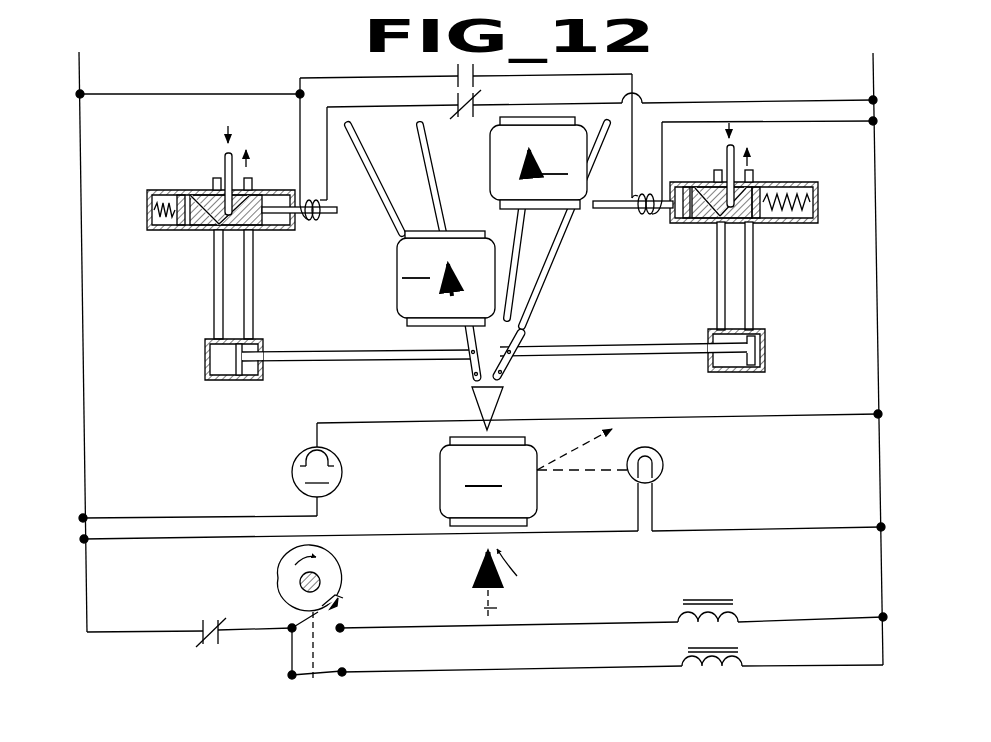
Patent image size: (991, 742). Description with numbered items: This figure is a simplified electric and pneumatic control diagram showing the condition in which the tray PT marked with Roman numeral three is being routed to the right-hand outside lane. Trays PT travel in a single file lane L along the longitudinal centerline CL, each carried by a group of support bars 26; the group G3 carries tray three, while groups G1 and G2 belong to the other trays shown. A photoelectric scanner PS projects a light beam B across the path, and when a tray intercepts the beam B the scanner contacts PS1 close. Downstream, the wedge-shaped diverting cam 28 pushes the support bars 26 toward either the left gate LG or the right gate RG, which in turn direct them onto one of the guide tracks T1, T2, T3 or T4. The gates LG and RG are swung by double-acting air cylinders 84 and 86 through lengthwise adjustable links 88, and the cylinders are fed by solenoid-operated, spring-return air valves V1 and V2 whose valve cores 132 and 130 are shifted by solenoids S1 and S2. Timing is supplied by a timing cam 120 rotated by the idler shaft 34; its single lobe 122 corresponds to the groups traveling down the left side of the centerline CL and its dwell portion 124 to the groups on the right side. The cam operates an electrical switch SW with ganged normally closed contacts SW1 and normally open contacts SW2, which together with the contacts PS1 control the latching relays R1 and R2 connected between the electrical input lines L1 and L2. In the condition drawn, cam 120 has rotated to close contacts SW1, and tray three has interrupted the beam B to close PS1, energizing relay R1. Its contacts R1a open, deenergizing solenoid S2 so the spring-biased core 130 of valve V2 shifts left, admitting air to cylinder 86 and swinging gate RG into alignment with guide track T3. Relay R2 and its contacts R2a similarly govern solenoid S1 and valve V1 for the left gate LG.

The electrical input line L1 is at (79, 68).
The electrical input line L2 is at (873, 86).
The relay contacts R1a is at (456, 67).
The relay contacts R2a is at (456, 97).
The air valve V1 is at (169, 190).
The air valve V2 is at (792, 182).
The valve core 132 is at (196, 234).
The valve core 130 is at (700, 223).
The solenoid S1 is at (322, 221).
The solenoid S2 is at (645, 218).
The double-acting air cylinder 84 is at (205, 360).
The double-acting air cylinder 86 is at (765, 347).
The lengthwise adjustable link 88 is at (393, 350).
The guide track T1 is at (510, 310).
The guide track T2 is at (428, 155).
The guide track T3 is at (546, 282).
The guide track T4 is at (393, 218).
The left gate LG is at (465, 368).
The right gate RG is at (503, 374).
The plastic food tray PT is at (490, 163).
The support bars 26 is at (500, 123).
The support plate group G1 is at (500, 205).
The support plate group G2 is at (410, 322).
The support plate group G3 is at (450, 522).
The wedge-shaped diverting cam 28 is at (478, 403).
The photoelectric scanner PS is at (291, 471).
The light beam B is at (585, 443).
The single file lane L is at (509, 583).
The longitudinal centerline CL is at (497, 606).
The timing cam 120 is at (283, 590).
The cam lobe 122 is at (277, 566).
The idler shaft 34 is at (320, 580).
The dwell portion 124 is at (336, 600).
The electrical switch SW is at (325, 657).
The normally closed contacts SW1 is at (324, 678).
The normally opened contacts SW2 is at (320, 617).
The scanner contacts PS1 is at (204, 618).
The latching relay R1 is at (743, 658).
The latching relay R2 is at (739, 612).